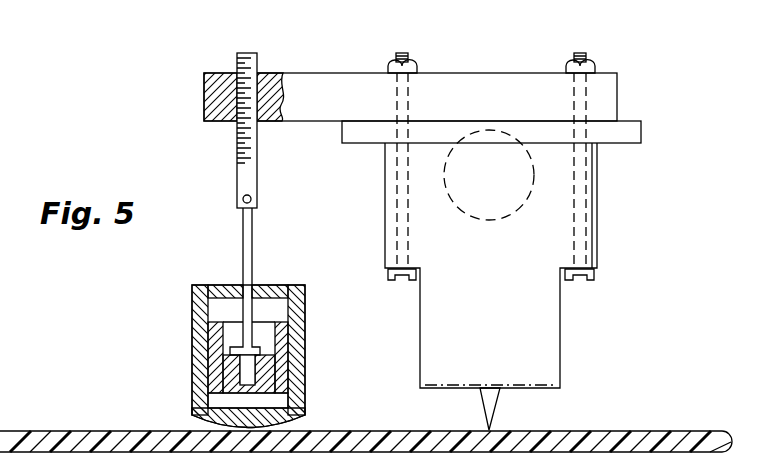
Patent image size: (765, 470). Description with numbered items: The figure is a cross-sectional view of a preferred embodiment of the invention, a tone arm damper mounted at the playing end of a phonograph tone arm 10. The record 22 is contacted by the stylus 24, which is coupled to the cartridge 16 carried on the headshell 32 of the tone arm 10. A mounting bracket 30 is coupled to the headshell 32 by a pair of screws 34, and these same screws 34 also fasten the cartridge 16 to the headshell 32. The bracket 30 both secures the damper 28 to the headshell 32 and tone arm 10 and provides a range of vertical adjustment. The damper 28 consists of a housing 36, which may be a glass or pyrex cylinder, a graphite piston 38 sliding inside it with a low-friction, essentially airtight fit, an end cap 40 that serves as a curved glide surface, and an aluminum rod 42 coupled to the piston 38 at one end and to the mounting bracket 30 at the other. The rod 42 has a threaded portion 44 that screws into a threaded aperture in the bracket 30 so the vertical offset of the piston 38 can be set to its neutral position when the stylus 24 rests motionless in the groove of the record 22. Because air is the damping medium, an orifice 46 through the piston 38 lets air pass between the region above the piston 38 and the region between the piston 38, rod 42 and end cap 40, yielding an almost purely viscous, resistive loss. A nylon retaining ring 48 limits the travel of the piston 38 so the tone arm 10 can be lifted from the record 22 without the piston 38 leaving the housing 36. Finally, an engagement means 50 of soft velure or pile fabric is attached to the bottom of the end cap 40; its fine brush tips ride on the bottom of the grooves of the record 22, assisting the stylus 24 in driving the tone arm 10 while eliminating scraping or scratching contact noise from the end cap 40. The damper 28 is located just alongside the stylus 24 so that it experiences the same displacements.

The tone arm 10 is at (534, 178).
The cartridge 16 is at (561, 323).
The record 22 is at (668, 432).
The stylus 24 is at (497, 410).
The damper 28 is at (158, 355).
The mounting bracket 30 is at (204, 96).
The headshell 32 is at (641, 136).
The screws 34 is at (400, 53).
The housing 36 is at (305, 318).
The piston 38 is at (275, 360).
The end cap 40 is at (208, 406).
The rod 42 is at (252, 237).
The threaded portion 44 is at (243, 172).
The orifice 46 is at (196, 337).
The retaining ring 48 is at (222, 285).
The engagement means 50 is at (300, 428).